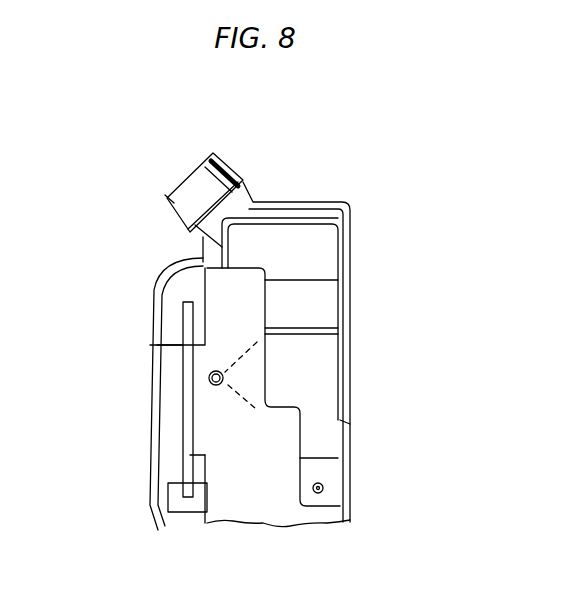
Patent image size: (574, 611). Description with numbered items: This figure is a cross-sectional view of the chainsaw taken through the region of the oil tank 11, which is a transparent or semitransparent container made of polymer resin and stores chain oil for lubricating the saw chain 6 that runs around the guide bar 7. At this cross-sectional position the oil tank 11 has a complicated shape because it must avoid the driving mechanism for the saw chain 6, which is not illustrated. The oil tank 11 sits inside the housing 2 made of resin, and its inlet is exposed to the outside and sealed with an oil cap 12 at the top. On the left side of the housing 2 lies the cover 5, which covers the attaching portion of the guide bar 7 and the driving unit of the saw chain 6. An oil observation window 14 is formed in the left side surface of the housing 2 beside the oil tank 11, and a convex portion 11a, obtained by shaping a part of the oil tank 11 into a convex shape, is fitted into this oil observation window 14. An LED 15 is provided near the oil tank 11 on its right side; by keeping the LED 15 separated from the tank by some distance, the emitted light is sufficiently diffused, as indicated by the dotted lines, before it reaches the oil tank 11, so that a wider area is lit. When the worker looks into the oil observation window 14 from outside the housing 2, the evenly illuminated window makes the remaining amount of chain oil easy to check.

The housing 2 is at (300, 207).
The cover 5 is at (145, 396).
The saw chain 6 is at (183, 312).
The guide bar 7 is at (187, 375).
The oil tank 11 is at (327, 260).
The convex portion 11a is at (343, 324).
The oil cap 12 is at (170, 194).
The oil observation window 14 is at (350, 420).
The LED 15 is at (213, 386).